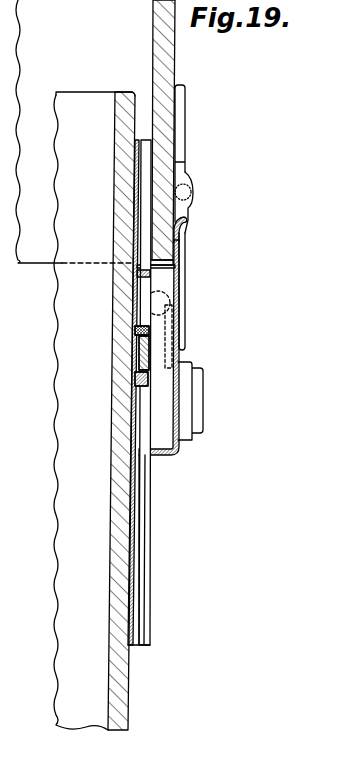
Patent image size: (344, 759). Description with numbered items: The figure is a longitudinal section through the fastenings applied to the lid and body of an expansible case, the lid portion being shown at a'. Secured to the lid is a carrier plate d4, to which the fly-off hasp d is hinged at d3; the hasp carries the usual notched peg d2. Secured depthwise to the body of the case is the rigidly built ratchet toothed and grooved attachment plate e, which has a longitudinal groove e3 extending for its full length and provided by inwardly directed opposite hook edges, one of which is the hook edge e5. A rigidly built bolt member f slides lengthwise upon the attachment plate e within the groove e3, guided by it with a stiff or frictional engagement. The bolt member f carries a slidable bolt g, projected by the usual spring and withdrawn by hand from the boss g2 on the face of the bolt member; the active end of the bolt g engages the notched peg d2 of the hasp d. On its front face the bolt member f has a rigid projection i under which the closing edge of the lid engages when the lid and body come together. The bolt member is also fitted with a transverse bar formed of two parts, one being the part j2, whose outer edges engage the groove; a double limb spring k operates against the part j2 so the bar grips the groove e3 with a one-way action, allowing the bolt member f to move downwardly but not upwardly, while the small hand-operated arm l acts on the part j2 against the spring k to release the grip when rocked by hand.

The plate a' is at (74, 131).
The carrier plate d4 is at (178, 118).
The hinge d3 is at (191, 186).
The hasp d is at (183, 292).
The notched peg d2 is at (153, 287).
The bolt member f is at (179, 336).
The rigid projection i is at (181, 250).
The double limb spring k is at (147, 324).
The bolt g is at (167, 338).
The boss g2 is at (188, 372).
The hand-operated arm l is at (148, 362).
The part of transverse bar j2 is at (146, 378).
The attachment plate e is at (137, 468).
The longitudinal groove e3 is at (140, 539).
The hook edge e5 is at (145, 593).